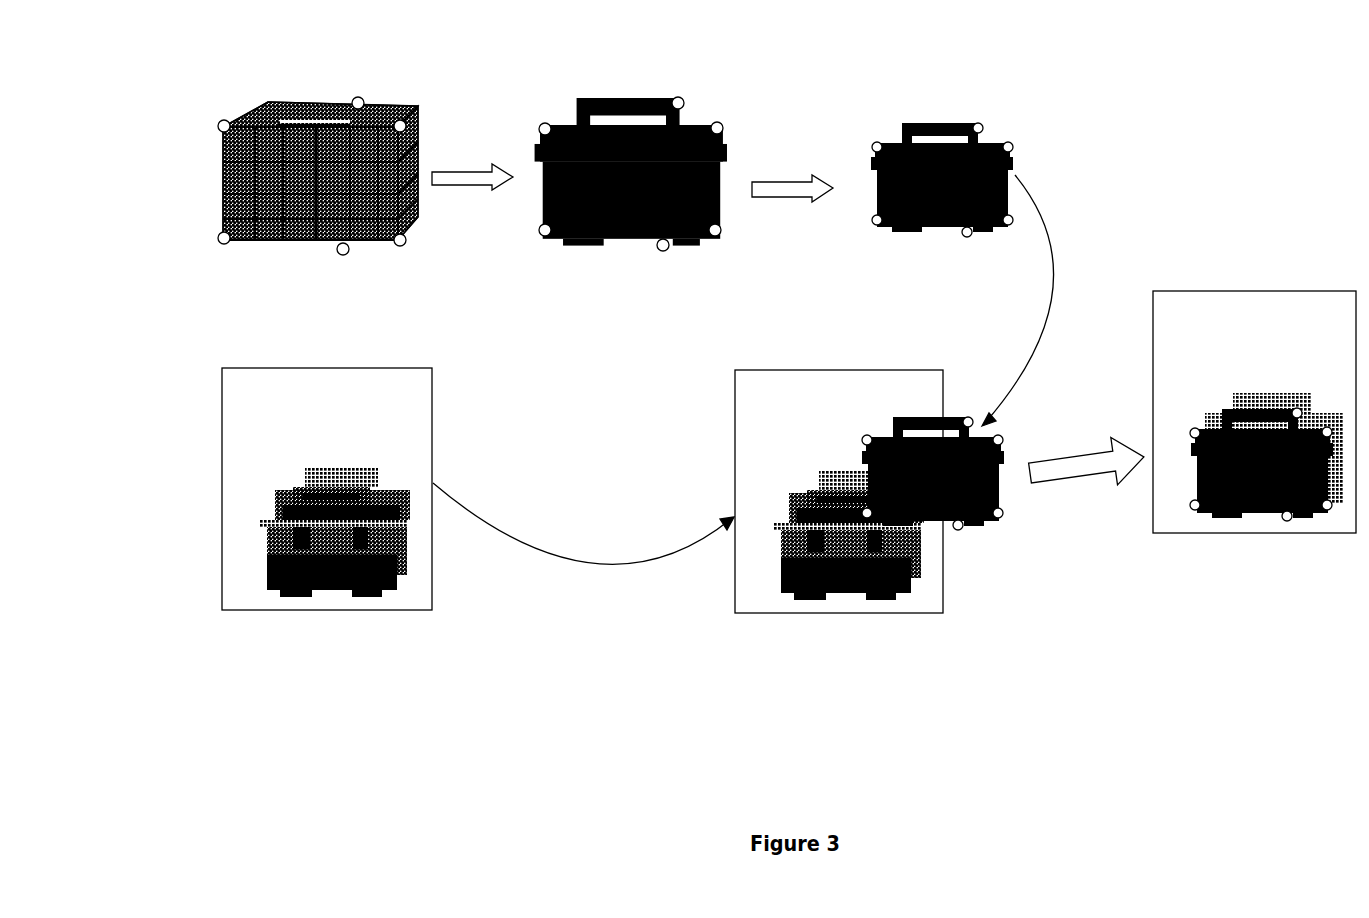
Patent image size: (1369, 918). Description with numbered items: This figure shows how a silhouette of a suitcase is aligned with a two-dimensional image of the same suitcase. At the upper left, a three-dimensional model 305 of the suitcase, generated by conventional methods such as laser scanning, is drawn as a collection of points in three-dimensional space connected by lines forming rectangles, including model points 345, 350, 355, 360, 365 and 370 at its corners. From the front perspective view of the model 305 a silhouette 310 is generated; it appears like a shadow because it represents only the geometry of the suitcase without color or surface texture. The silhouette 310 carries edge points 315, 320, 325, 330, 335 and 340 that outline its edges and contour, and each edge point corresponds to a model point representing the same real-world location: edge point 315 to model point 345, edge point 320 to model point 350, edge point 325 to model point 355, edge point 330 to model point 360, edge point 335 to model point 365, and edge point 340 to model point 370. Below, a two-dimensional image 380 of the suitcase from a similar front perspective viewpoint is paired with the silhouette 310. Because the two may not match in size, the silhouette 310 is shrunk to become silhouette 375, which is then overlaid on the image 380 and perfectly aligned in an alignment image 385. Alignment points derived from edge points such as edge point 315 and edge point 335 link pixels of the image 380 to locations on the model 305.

The 3D model 305 is at (256, 101).
The silhouette 310 is at (579, 104).
The edge point 315 is at (540, 233).
The edge point 320 is at (659, 250).
The edge point 325 is at (721, 231).
The edge point 330 is at (684, 101).
The edge point 335 is at (722, 126).
The edge point 340 is at (539, 130).
The 3D point 345 is at (217, 239).
The 3D point 350 is at (338, 253).
The 3D point 355 is at (399, 247).
The 3D point 360 is at (355, 97).
The 3D point 365 is at (403, 120).
The 3D point 370 is at (217, 127).
The shrunk silhouette 375 is at (946, 122).
The 2D image 380 is at (221, 386).
The alignment image 385 is at (1192, 291).